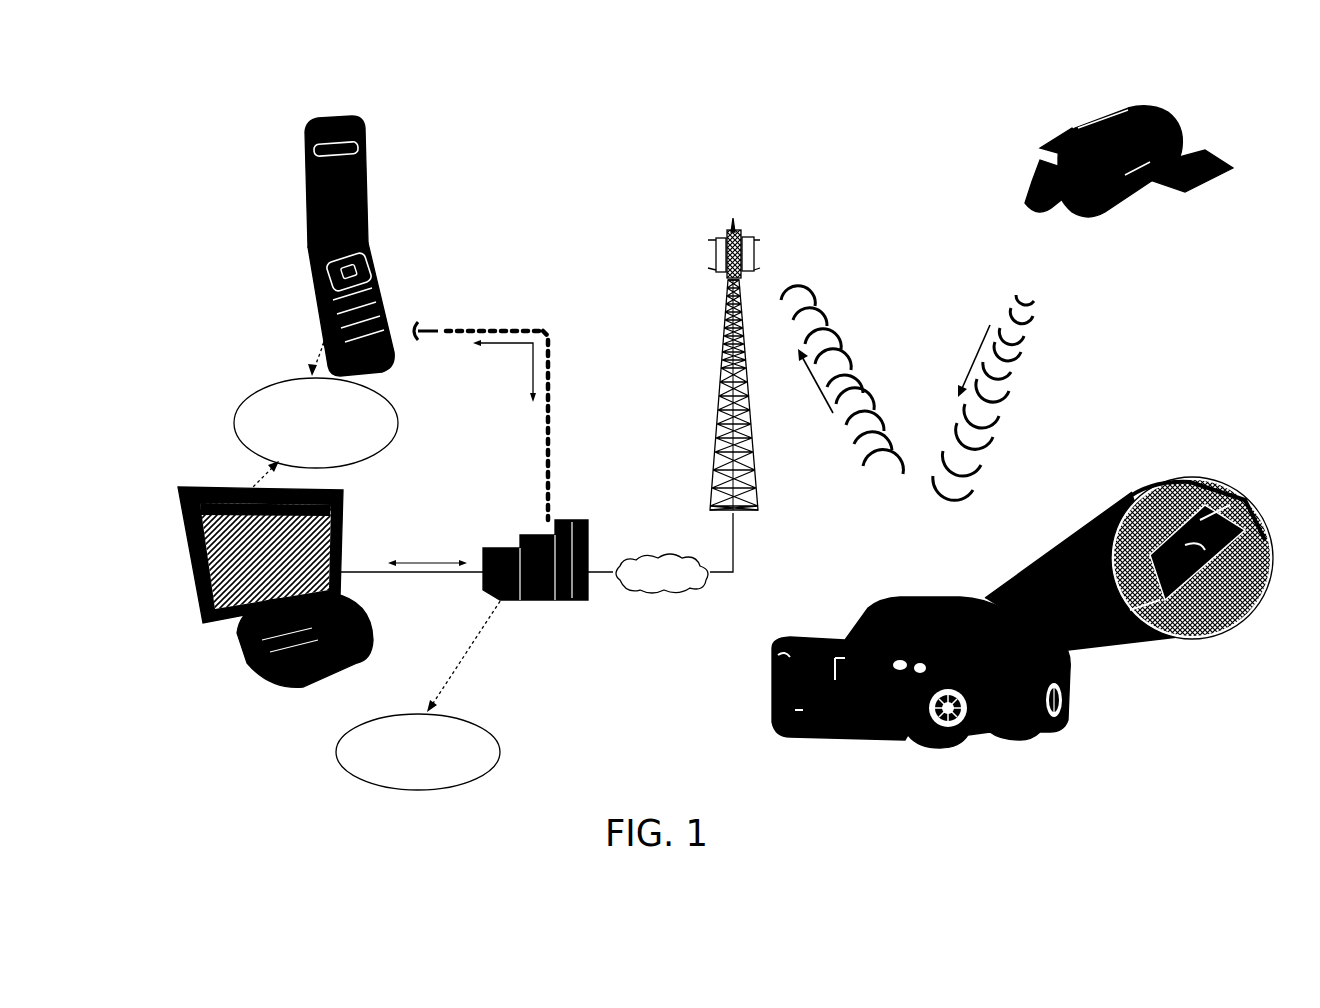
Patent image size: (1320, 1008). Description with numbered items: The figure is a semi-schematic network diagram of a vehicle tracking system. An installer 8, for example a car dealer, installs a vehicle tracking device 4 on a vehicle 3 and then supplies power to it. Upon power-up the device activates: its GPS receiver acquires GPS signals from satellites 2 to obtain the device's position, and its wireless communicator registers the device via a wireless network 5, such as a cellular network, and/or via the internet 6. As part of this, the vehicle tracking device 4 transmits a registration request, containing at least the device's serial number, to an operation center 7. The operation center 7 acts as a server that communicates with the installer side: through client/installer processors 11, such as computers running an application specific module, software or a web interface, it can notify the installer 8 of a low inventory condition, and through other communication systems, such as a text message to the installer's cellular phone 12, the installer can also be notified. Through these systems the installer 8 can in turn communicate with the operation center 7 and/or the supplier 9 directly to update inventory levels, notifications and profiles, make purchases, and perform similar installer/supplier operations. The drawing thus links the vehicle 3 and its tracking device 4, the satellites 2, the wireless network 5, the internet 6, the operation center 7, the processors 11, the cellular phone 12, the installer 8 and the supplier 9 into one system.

The satellites 2 is at (1023, 203).
The vehicle 3 is at (831, 633).
The vehicle tracking device 4 is at (1232, 510).
The wireless network 5 is at (718, 248).
The internet 6 is at (640, 581).
The operation center 7 is at (588, 548).
The installer 8 is at (316, 423).
The supplier 9 is at (418, 752).
The client/installer processors 11 is at (243, 648).
The installer's cellular phone 12 is at (377, 280).